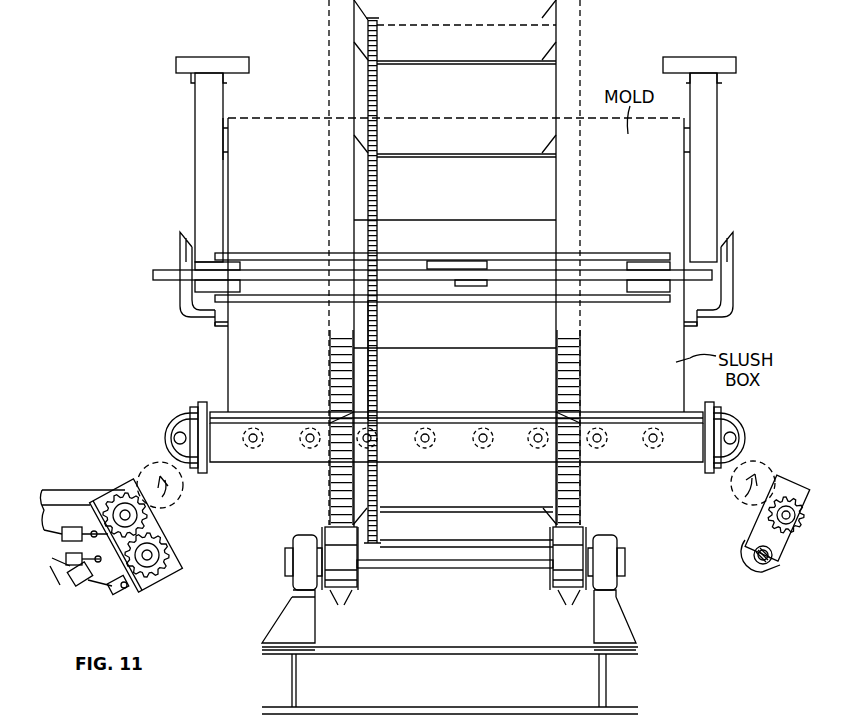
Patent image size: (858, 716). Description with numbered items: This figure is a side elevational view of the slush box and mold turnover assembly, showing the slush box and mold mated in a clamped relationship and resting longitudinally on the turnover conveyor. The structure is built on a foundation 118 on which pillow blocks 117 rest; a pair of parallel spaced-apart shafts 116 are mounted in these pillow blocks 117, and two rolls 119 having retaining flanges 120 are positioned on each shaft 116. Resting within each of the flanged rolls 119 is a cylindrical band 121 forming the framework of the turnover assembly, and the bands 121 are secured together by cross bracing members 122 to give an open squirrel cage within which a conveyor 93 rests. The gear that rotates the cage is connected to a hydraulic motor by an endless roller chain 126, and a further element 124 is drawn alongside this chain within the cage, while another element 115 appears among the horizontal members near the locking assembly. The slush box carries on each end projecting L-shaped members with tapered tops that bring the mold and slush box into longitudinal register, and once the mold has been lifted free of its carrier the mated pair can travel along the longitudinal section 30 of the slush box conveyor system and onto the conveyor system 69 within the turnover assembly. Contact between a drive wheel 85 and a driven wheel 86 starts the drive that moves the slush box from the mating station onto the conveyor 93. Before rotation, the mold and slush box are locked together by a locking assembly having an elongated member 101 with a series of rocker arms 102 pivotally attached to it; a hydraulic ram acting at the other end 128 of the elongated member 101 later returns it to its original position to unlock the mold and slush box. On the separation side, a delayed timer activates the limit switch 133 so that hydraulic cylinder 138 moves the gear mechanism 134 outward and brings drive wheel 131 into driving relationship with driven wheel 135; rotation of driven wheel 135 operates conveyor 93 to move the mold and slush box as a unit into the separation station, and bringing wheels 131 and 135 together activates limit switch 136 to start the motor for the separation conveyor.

The longitudinal section 30 is at (54, 492).
The conveyor system 69 is at (310, 450).
The drive wheel 85 is at (754, 462).
The driven wheel 86 is at (740, 414).
The conveyor 93 is at (618, 462).
The elongated member 101 is at (272, 268).
The rocker arms 102 is at (204, 286).
The cross bar 115 is at (278, 300).
The shafts 116 is at (454, 568).
The pillow blocks 117 is at (302, 556).
The foundation 118 is at (606, 685).
The rolls 119 is at (354, 580).
The retaining flanges 120 is at (456, 607).
The cylindrical band 121 is at (338, 351).
The cross bracing members 122 is at (480, 62).
The drive chain 124 is at (378, 330).
The endless roller chain 126 is at (378, 376).
The other end 128 is at (158, 274).
The driven wheel 131 is at (142, 474).
The limit switch 133 is at (66, 558).
The gear box 134 is at (180, 567).
The driven wheel 135 is at (166, 428).
The limit switch 136 is at (58, 530).
The hydraulic cylinder 138 is at (70, 580).